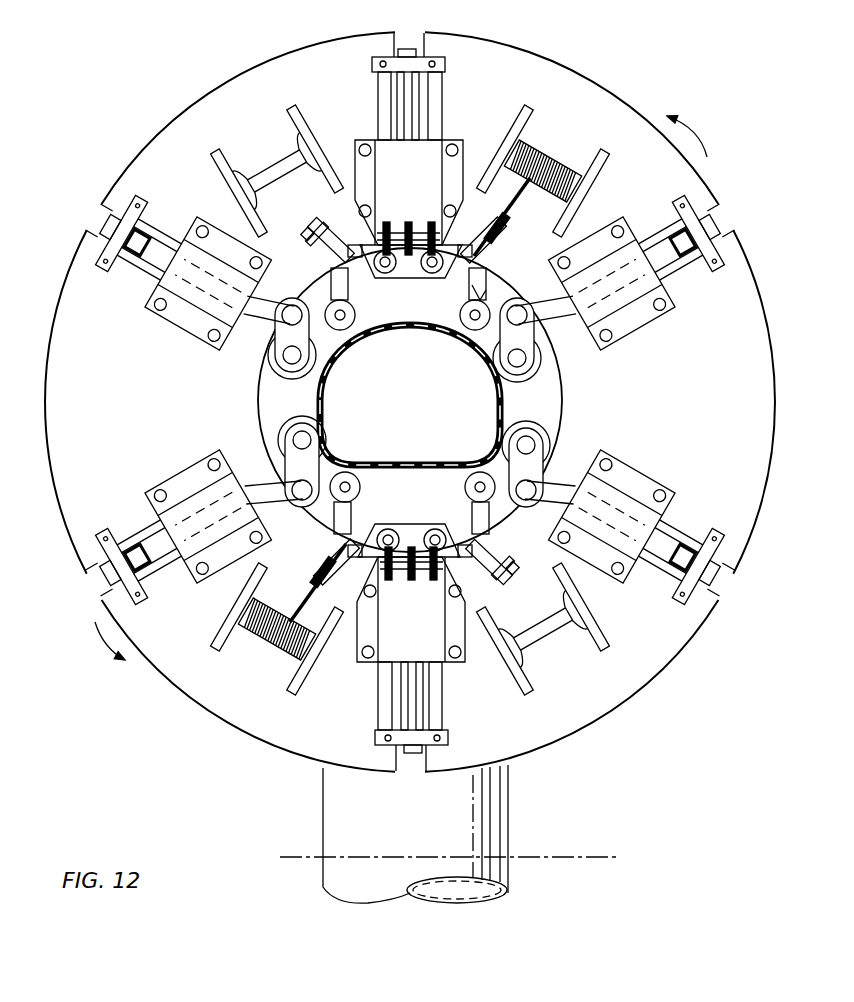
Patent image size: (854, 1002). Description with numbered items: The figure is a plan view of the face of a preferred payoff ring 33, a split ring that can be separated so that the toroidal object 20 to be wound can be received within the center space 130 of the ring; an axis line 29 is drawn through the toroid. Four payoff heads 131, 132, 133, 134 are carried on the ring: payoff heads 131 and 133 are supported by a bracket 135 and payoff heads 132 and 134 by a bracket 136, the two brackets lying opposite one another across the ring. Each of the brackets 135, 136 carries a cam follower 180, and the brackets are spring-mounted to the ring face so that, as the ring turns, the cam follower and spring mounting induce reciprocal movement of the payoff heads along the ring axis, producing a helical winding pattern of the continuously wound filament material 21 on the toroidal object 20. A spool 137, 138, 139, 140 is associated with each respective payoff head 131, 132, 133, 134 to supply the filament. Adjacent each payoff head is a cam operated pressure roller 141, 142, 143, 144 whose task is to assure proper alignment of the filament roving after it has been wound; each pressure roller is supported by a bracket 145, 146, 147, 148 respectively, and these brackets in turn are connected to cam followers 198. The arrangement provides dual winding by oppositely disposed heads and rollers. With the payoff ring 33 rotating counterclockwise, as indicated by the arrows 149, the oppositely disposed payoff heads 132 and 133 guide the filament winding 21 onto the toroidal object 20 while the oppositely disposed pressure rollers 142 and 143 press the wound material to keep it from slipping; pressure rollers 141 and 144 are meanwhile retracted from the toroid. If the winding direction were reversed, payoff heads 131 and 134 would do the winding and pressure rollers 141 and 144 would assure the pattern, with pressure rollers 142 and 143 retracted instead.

The toroidal object 20 is at (510, 780).
The filament material 21 is at (517, 205).
The pipe axis center line 29 is at (582, 857).
The payoff ring 33 is at (757, 540).
The center space 130 is at (563, 395).
The payoff head 131 is at (362, 313).
The payoff head 132 is at (362, 487).
The payoff head 133 is at (456, 314).
The payoff head 134 is at (468, 493).
The bracket 135 is at (362, 138).
The bracket 136 is at (455, 664).
The spool 137 is at (218, 160).
The spool 138 is at (240, 625).
The spool 139 is at (596, 178).
The spool 140 is at (600, 635).
The pressure roller 141 is at (267, 368).
The pressure roller 142 is at (263, 410).
The pressure roller 143 is at (545, 363).
The pressure roller 144 is at (550, 440).
The bracket 145 is at (175, 330).
The bracket 146 is at (178, 472).
The bracket 147 is at (636, 333).
The bracket 148 is at (648, 477).
The arrows 149 is at (690, 133).
The cam follower 180 is at (408, 49).
The cam followers 198 is at (108, 212).